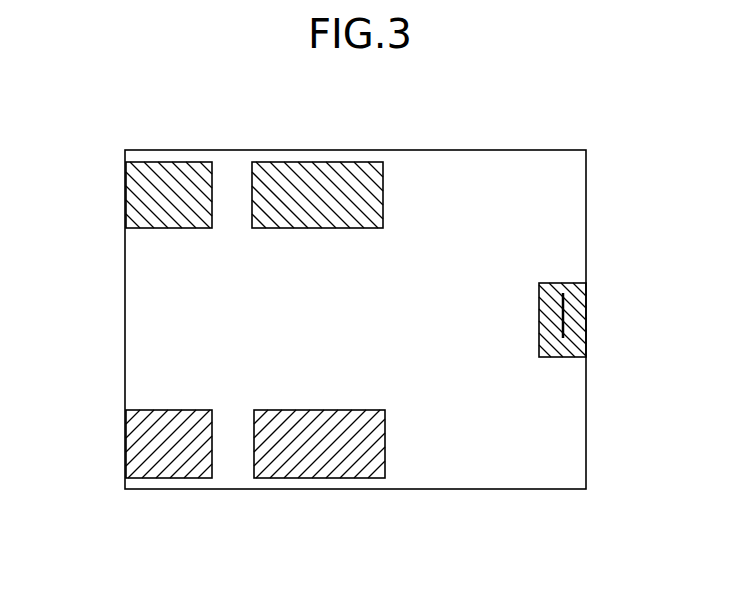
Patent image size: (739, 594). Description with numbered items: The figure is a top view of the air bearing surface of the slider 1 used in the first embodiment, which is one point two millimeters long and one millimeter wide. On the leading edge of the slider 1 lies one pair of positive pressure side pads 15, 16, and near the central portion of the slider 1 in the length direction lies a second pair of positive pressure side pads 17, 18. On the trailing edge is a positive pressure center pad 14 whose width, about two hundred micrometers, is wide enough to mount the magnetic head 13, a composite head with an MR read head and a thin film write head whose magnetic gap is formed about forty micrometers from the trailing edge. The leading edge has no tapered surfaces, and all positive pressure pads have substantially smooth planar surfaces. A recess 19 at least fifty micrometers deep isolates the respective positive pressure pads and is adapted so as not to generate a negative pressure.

The slider 1 is at (112, 307).
The magnetic head 13 is at (563, 337).
The positive pressure center pad 14 is at (573, 302).
The positive pressure side pad 15 is at (158, 189).
The positive pressure side pad 16 is at (153, 440).
The positive pressure side pad 17 is at (309, 178).
The positive pressure side pad 18 is at (316, 463).
The recess 19 is at (346, 330).